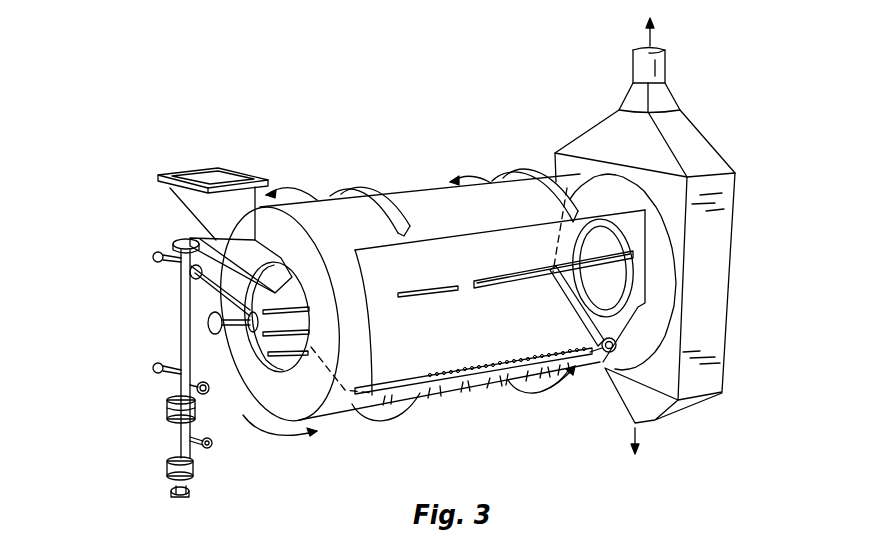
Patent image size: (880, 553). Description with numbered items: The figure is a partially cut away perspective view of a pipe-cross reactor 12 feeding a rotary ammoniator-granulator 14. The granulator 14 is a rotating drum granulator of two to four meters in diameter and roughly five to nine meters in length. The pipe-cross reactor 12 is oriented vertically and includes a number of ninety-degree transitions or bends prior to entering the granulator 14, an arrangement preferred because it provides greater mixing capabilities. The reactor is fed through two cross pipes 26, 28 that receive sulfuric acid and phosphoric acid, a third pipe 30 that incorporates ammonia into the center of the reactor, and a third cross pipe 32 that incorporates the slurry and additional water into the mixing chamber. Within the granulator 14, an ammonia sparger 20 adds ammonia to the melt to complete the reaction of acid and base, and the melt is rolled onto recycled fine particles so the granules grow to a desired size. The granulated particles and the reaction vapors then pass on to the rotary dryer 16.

The pipe-cross reactor 12 is at (388, 288).
The granulator 14 is at (372, 156).
The rotary dryer 16 is at (633, 454).
The ammonia sparger 20 is at (470, 358).
The cross pipe 26 is at (150, 371).
The cross pipe 28 is at (210, 400).
The third pipe 30 is at (190, 500).
The third cross pipe 32 is at (203, 445).